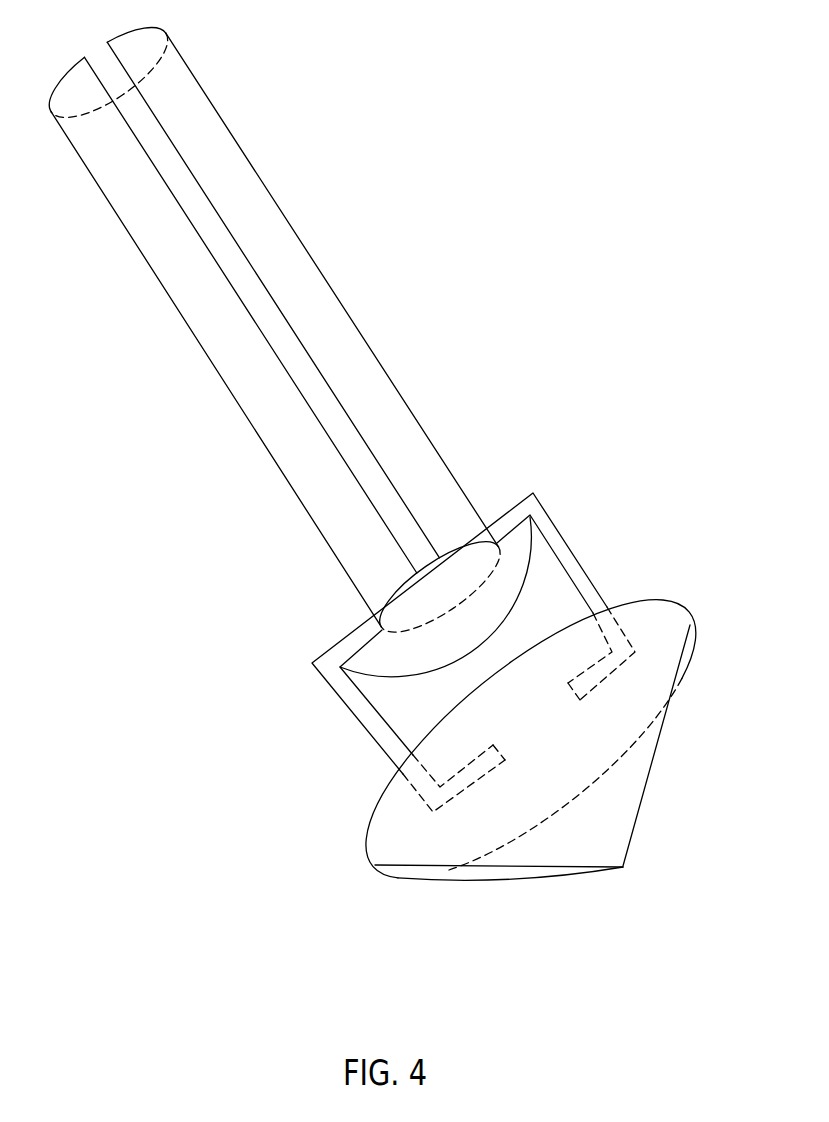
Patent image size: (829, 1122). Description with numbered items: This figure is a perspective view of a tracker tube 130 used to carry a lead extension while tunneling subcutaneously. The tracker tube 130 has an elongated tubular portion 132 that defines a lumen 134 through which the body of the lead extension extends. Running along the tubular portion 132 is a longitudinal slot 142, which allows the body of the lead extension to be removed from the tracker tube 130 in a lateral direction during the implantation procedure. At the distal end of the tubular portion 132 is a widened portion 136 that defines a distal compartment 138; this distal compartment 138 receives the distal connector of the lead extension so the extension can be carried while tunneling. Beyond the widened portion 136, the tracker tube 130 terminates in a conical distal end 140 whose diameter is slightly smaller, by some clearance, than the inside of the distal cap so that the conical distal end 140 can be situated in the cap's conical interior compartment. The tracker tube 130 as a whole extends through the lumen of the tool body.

The tracker tube 130 is at (332, 223).
The tubular portion 132 is at (257, 189).
The longitudinal slot 142 is at (302, 403).
The lumen 134 is at (408, 607).
The widened portion 136 is at (513, 503).
The distal compartment 138 is at (552, 593).
The conical distal end 140 is at (633, 770).